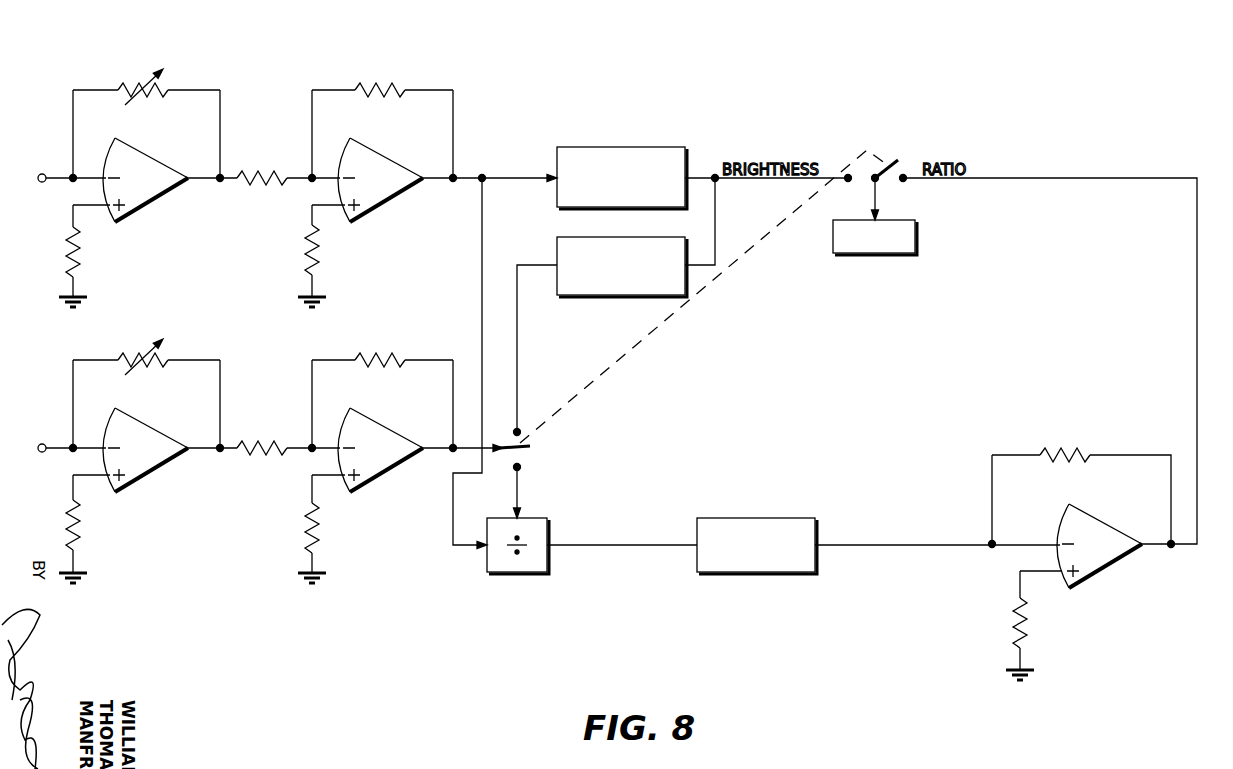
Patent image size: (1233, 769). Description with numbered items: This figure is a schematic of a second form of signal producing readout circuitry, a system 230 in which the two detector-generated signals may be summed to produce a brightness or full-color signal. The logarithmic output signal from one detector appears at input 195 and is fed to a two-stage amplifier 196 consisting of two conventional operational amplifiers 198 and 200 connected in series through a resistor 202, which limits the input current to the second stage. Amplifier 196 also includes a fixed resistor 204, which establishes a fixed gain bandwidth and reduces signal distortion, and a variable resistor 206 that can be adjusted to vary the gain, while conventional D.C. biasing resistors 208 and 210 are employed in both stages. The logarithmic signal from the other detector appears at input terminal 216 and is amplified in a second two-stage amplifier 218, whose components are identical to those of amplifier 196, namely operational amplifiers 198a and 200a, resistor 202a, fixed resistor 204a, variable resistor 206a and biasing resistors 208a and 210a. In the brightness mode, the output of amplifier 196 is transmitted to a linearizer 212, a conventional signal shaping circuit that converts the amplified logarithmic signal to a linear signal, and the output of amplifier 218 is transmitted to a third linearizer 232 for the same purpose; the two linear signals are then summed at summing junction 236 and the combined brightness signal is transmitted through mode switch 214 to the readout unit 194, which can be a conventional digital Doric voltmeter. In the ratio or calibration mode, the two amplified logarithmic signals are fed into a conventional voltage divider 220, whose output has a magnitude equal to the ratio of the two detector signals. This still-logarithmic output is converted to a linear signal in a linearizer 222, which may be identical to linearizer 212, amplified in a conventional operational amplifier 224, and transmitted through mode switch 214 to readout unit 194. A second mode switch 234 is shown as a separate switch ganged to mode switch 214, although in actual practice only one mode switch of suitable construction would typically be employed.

The readout unit 194 is at (915, 240).
The input 195 is at (40, 174).
The two-stage amplifier 196 is at (290, 78).
The operational amplifier 198 is at (64, 106).
The operational amplifier 198a is at (152, 481).
The operational amplifier 200 is at (305, 128).
The operational amplifier 200a is at (428, 345).
The resistor 202 is at (268, 171).
The resistor 202a is at (258, 441).
The fixed resistor 204 is at (400, 84).
The fixed resistor 204a is at (377, 354).
The variable resistor 206 is at (132, 84).
The variable resistor 206a is at (132, 354).
The D.C. biasing resistor 208 is at (303, 247).
The D.C. biasing resistor 208a is at (302, 537).
The D.C. biasing resistor 210 is at (65, 247).
The D.C. biasing resistor 210a is at (67, 507).
The linearizer 212 is at (625, 146).
The mode switch 214 is at (889, 157).
The input terminal 216 is at (41, 443).
The two-stage amplifier 218 is at (257, 333).
The voltage divider 220 is at (487, 565).
The linearizer 222 is at (759, 518).
The operational amplifier 224 is at (1110, 570).
The system 230 is at (1106, 130).
The third linearizer 232 is at (590, 296).
The second mode switch 234 is at (545, 447).
The summing junction 236 is at (713, 174).